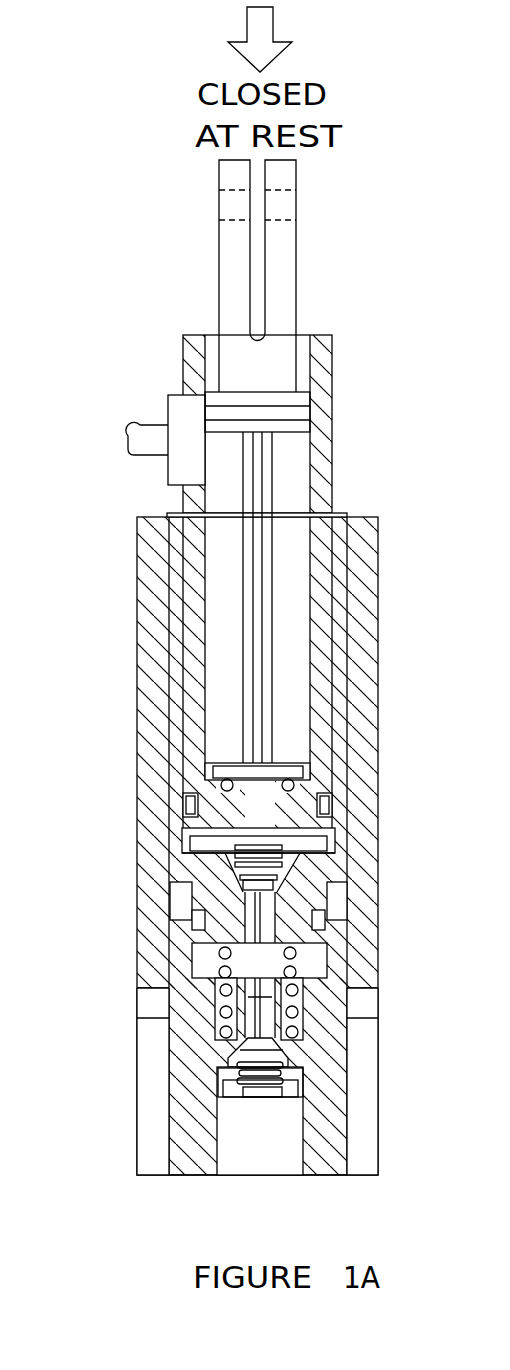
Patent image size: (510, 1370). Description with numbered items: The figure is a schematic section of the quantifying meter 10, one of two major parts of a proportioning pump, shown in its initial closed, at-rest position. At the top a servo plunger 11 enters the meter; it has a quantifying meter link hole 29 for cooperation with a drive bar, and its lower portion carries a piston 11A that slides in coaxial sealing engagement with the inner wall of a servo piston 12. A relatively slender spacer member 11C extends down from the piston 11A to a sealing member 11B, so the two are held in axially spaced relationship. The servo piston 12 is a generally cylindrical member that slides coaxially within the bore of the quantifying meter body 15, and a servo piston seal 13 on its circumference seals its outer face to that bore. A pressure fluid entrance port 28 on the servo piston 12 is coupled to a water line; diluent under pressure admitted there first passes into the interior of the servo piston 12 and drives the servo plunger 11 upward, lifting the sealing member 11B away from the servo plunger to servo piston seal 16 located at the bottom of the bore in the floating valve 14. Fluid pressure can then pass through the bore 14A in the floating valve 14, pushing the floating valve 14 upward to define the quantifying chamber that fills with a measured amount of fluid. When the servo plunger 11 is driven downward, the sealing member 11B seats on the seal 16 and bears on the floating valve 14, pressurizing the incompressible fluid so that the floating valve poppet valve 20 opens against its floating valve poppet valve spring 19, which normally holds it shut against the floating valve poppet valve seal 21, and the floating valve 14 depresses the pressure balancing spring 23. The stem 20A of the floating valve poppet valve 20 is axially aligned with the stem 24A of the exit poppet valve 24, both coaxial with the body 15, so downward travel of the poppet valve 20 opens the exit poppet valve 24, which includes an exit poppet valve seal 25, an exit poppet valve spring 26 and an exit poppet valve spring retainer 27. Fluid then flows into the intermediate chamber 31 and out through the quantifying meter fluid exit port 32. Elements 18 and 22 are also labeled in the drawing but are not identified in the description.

The quantifying meter 10 is at (128, 713).
The servo plunger 11 is at (296, 277).
The piston 11A is at (310, 400).
The sealing member 11B is at (229, 758).
The spacer member 11C is at (272, 560).
The servo piston 12 is at (332, 421).
The servo piston seal 13 is at (330, 790).
The floating valve 14 is at (330, 515).
The bore 14A is at (247, 822).
The quantifying meter body 15 is at (378, 598).
The servo plunger to servo piston seal 16 is at (213, 780).
The diaphragm plate 18 is at (190, 847).
The floating valve poppet valve spring 19 is at (283, 848).
The floating valve poppet valve 20 is at (305, 880).
The stem of floating valve poppet valve 20A is at (245, 935).
The floating valve poppet valve seal 21 is at (248, 895).
The valve body recess 22 is at (328, 912).
The pressure balancing spring 23 is at (297, 970).
The exit poppet valve 24 is at (246, 1040).
The stem of exit poppet valve 24A is at (215, 1003).
The exit poppet valve seal 25 is at (285, 1050).
The exit poppet valve spring 26 is at (300, 1072).
The exit poppet valve spring retainer 27 is at (300, 1098).
The pressure fluid entrance port 28 is at (127, 440).
The quantifying meter link hole 29 is at (296, 199).
The intermediate chamber 31 is at (325, 953).
The quantifying meter fluid exit port 32 is at (275, 1177).